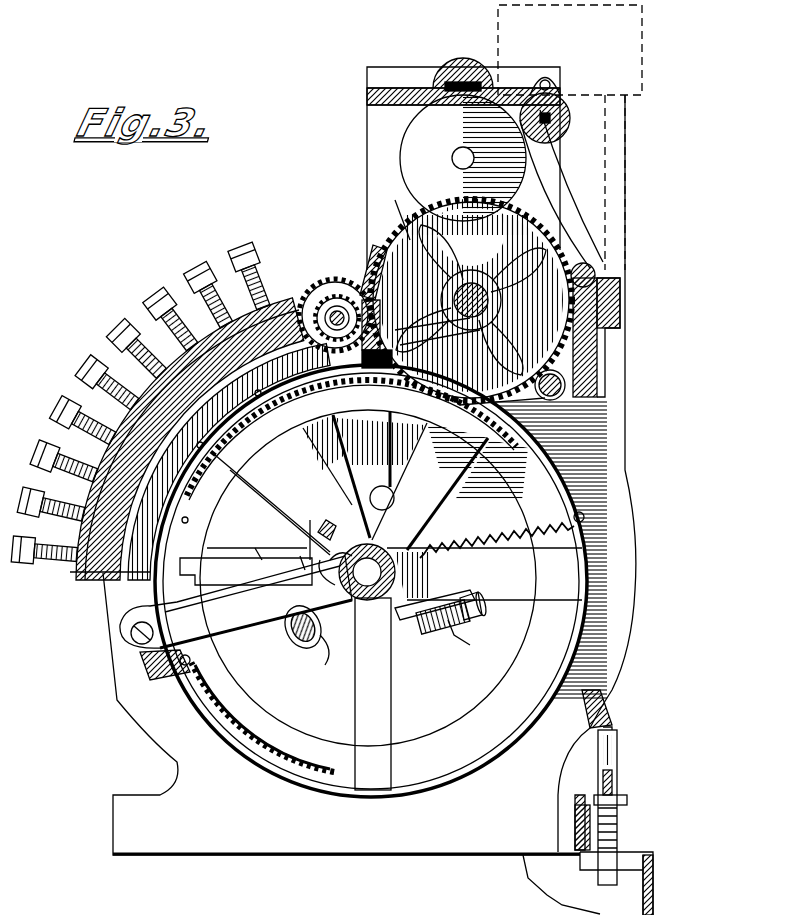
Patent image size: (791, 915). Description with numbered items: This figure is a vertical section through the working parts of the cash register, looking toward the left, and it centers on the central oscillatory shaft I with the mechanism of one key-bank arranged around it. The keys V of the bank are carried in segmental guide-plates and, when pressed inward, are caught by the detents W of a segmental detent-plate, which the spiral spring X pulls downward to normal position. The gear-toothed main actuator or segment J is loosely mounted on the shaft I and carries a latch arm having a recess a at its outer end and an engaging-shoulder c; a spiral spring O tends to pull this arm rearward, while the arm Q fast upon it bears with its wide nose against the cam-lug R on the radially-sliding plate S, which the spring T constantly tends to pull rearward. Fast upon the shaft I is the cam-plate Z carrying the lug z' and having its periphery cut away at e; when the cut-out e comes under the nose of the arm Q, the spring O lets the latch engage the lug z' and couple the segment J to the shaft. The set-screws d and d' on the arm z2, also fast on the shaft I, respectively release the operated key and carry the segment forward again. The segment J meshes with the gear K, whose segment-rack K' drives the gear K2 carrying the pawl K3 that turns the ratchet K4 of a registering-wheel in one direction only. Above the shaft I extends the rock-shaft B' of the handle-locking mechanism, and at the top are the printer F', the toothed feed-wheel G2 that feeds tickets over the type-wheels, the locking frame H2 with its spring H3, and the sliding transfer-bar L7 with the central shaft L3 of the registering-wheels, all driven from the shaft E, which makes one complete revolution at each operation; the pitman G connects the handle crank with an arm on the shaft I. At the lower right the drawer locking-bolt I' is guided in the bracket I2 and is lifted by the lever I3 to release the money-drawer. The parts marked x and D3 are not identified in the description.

The shaft E is at (618, 415).
The central oscillatory shaft I is at (203, 456).
The keys V is at (85, 372).
The rock-shaft B' is at (371, 581).
The cam-plate Z is at (442, 601).
The radially-sliding plate S is at (236, 602).
The recess a is at (246, 567).
The arm Q is at (288, 633).
The cam-lug R is at (323, 650).
The spiral spring X is at (270, 680).
The spiral spring T is at (502, 533).
The set-screw d is at (435, 631).
The second set-screw d' is at (467, 620).
The arm z2 is at (447, 645).
The lug z' is at (333, 515).
The cut-away portion e is at (335, 558).
The engaging-shoulder c is at (300, 556).
The spiral spring O is at (301, 530).
The detents W is at (280, 512).
The pin x is at (250, 545).
The gear-toothed segment J is at (278, 435).
The segment-rack K' is at (471, 299).
The sliding bar L7 is at (422, 333).
The gear K is at (512, 413).
The disk D3 is at (430, 170).
The printer F' is at (463, 63).
The toothed feed-wheel G2 is at (560, 132).
The frame H2 is at (560, 200).
The pitman G is at (640, 80).
The spring H3 is at (620, 345).
The ratchet K4 is at (322, 300).
The gear K2 is at (335, 296).
The pawl K3 is at (377, 314).
The central shaft L3 is at (348, 286).
The bolt I' is at (623, 806).
The lever I3 is at (603, 782).
The bracket I2 is at (630, 797).